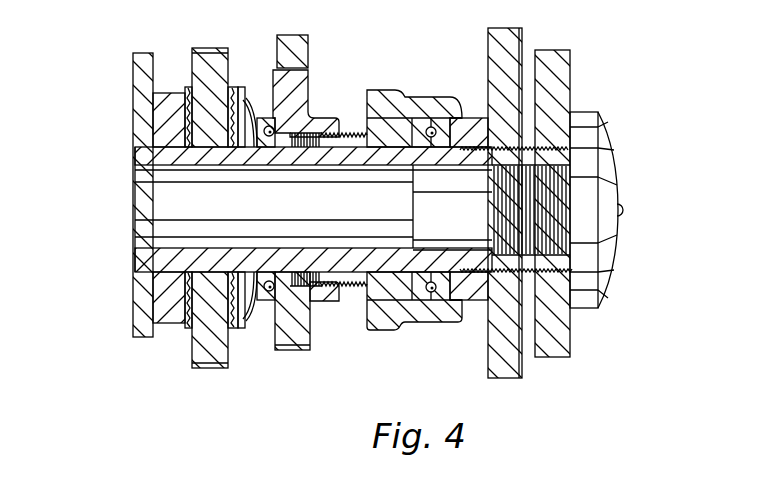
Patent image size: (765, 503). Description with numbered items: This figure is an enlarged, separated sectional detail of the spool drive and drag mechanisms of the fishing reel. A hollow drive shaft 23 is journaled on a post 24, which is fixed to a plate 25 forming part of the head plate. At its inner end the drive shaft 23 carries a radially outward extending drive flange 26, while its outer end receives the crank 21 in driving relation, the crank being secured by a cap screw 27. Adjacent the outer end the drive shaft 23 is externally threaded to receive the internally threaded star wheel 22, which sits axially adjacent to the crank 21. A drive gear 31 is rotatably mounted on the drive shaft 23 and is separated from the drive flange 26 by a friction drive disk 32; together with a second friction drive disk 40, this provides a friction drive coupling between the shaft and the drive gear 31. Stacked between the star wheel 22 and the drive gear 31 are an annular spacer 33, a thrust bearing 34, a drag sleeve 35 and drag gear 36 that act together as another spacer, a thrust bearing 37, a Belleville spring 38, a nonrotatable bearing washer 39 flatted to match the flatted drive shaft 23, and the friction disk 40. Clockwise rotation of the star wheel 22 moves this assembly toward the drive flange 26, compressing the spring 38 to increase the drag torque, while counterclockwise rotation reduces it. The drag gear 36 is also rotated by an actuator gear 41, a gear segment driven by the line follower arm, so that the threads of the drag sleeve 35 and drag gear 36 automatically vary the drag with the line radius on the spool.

The crank 21 is at (557, 57).
The star wheel 22 is at (493, 42).
The hollow drive shaft 23 is at (357, 267).
The post 24 is at (148, 203).
The plate 25 is at (143, 96).
The drive flange 26 is at (165, 100).
The cap screw 27 is at (603, 173).
The drive gear 31 is at (205, 62).
The friction drive disk 32 is at (188, 327).
The annular spacer 33 is at (470, 300).
The thrust bearing 34 is at (437, 122).
The drag sleeve 35 is at (368, 125).
The drag gear 36 is at (295, 333).
The thrust bearing 37 is at (257, 300).
The Belleville spring 38 is at (253, 107).
The nonrotatable bearing washer 39 is at (233, 328).
The friction drive disk 40 is at (232, 88).
The actuator gear 41 is at (307, 53).